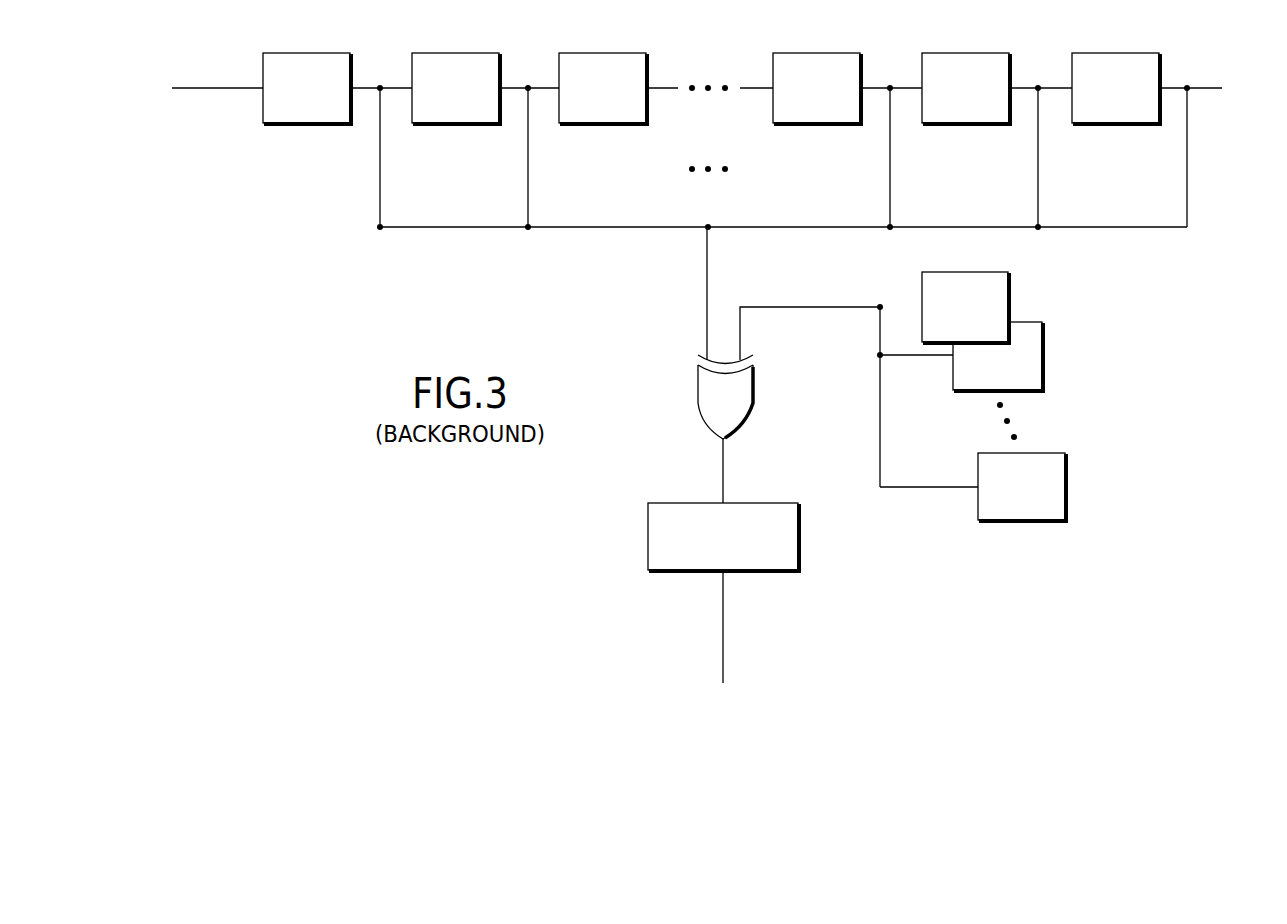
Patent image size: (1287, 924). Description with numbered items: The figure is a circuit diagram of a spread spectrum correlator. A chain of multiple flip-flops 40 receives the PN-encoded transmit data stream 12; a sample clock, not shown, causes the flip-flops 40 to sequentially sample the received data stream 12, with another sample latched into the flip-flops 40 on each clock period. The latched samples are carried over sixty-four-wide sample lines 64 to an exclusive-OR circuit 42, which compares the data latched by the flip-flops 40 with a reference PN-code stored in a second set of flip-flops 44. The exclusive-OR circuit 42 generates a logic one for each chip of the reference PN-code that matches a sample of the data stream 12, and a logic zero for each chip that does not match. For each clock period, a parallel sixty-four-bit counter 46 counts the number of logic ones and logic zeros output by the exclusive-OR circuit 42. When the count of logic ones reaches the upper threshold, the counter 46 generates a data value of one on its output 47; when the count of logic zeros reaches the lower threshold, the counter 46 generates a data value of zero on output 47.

The PN-encoded transmit data stream 12 is at (226, 87).
The flip-flops 40 is at (281, 146).
The 64-bit sample/data lines 64 is at (692, 293).
The exclusive-OR circuit 42 is at (698, 392).
The flip-flops storing reference PN-code 44 is at (1087, 518).
The parallel 64-bit counter 46 is at (648, 541).
The output 47 is at (721, 628).